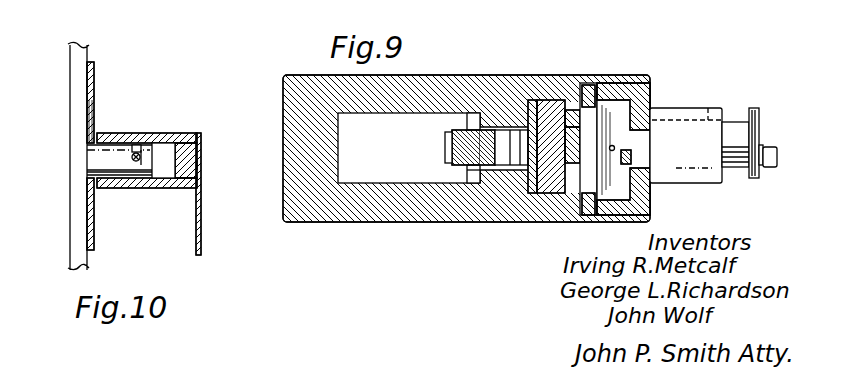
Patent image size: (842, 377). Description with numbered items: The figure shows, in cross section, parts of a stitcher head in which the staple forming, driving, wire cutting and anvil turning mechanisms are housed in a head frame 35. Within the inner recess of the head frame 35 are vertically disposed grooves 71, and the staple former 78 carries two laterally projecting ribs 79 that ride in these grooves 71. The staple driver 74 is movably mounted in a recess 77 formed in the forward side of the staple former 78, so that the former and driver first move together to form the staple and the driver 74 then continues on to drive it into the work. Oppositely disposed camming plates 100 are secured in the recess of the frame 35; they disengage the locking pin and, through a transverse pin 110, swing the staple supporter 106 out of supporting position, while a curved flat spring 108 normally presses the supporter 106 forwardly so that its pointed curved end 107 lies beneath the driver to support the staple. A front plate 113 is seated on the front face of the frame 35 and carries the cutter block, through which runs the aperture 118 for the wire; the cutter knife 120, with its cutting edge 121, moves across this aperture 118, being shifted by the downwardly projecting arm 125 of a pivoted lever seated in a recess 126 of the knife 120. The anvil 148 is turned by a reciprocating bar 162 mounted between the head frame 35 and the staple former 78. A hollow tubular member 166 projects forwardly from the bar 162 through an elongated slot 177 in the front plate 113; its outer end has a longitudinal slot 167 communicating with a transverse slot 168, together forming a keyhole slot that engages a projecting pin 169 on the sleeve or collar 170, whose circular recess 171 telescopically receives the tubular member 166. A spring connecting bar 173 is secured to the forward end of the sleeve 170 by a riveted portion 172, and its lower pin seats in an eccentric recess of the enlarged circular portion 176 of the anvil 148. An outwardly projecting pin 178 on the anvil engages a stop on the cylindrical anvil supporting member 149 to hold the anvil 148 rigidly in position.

In FIG. 9, the head frame 35 is at (378, 222).
In FIG. 9, the grooves 71 is at (588, 85).
In FIG. 9, the staple driver 74 is at (572, 170).
In FIG. 9, the recess 77 is at (646, 159).
In FIG. 9, the staple former 78 is at (550, 198).
In FIG. 9, the laterally projecting ribs 79 is at (545, 100).
In FIG. 9, the camming plates 100 is at (472, 113).
In FIG. 9, the staple supporter 106 is at (472, 138).
In FIG. 9, the pointed curved end 107 is at (520, 135).
In FIG. 9, the curved flat spring 108 is at (445, 144).
In FIG. 9, the transverse pin 110 is at (467, 174).
In FIG. 9, the aperture 118 is at (688, 128).
In FIG. 9, the cutter knife 120 is at (646, 92).
In FIG. 9, the cutting edge 121 is at (640, 194).
In FIG. 9, the downwardly projecting arm 125 is at (632, 157).
In FIG. 9, the recess 126 is at (614, 148).
In FIG. 9, the anvil 148 is at (757, 178).
In FIG. 9, the anvil supporting member 149 is at (718, 180).
In FIG. 9, the spring connecting bar 173 is at (771, 147).
In FIG. 10, the spring connecting bar 173 is at (201, 242).
In FIG. 9, the enlarged circular portion 176 is at (754, 108).
In FIG. 9, the outwardly projecting pin 178 is at (710, 107).
In FIG. 10, the front plate 113 is at (91, 65).
In FIG. 10, the reciprocating bar 162 is at (78, 119).
In FIG. 10, the hollow tubular member 166 is at (110, 143).
In FIG. 10, the longitudinal slot 167 is at (143, 145).
In FIG. 10, the transverse slot 168 is at (133, 158).
In FIG. 10, the projecting pin 169 is at (140, 165).
In FIG. 10, the sleeve or collar 170 is at (177, 133).
In FIG. 10, the circular recess 171 is at (168, 175).
In FIG. 10, the riveted portion 172 is at (201, 160).
In FIG. 10, the elongated slot 177 is at (93, 114).